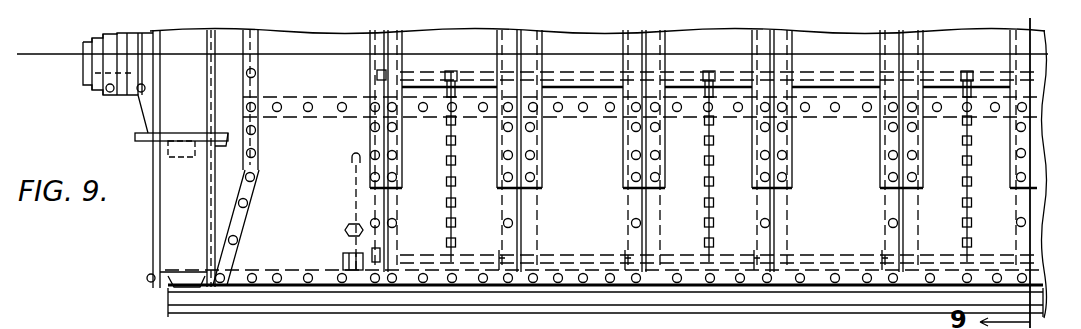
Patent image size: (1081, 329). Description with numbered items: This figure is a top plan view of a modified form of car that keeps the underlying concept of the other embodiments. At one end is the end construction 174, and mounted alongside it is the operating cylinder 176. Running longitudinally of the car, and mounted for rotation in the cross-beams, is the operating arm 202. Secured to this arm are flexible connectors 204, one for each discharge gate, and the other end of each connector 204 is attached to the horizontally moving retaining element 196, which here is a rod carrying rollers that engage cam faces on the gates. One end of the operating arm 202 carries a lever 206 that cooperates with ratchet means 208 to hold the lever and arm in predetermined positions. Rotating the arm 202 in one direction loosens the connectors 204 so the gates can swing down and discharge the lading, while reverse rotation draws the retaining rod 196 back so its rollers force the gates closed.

The end construction 174 is at (175, 228).
The operating cylinder 176 is at (136, 138).
The retaining element 196 is at (688, 83).
The operating arm 202 is at (592, 247).
The flexible connectors 204 is at (453, 183).
The lever 206 is at (353, 202).
The ratchet means 208 is at (343, 268).